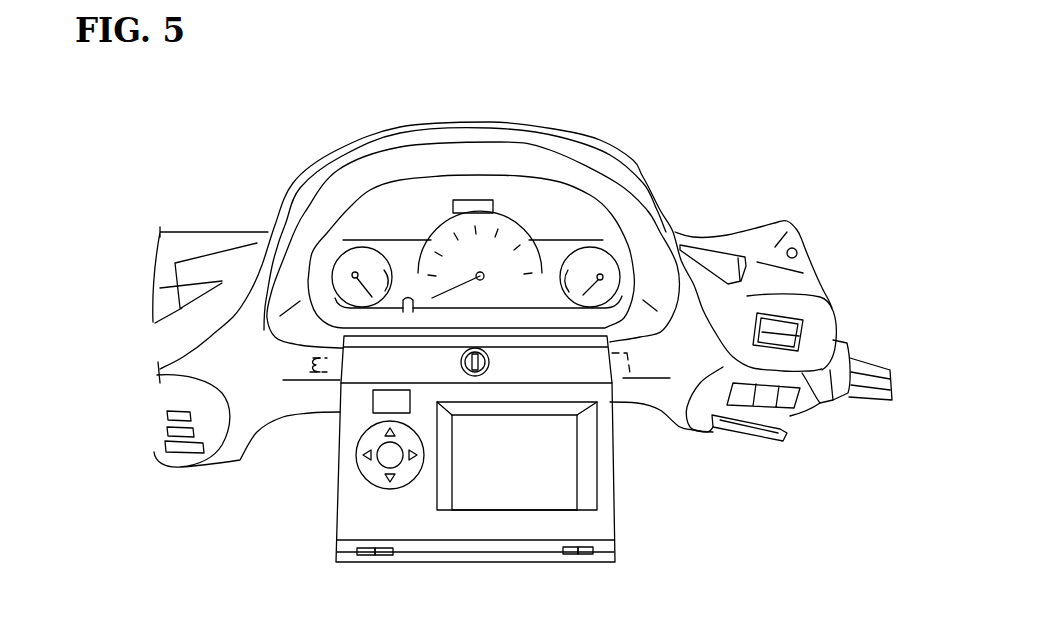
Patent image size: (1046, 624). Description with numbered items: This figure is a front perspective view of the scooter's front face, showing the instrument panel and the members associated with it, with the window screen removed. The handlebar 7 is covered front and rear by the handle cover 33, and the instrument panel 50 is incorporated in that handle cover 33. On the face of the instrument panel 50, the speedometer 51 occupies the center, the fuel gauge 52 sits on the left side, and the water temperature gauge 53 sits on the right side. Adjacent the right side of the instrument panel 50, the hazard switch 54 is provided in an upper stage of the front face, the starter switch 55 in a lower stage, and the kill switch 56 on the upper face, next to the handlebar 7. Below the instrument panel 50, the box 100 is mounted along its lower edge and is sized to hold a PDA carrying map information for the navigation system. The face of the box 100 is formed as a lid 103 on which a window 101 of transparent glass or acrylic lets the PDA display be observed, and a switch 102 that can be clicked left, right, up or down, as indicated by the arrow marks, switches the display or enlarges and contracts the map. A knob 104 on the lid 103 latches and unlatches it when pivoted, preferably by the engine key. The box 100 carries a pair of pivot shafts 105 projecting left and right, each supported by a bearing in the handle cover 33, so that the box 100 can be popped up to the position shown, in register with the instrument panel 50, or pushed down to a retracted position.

The handlebar 7 is at (868, 378).
The handle cover 33 is at (288, 182).
The instrument panel 50 is at (553, 175).
The speedometer 51 is at (473, 238).
The fuel gauge 52 is at (378, 267).
The water temperature gauge 53 is at (588, 257).
The hazard switch 54 is at (790, 401).
The starter switch 55 is at (760, 436).
The kill switch 56 is at (787, 320).
The box 100 is at (326, 511).
The window 101 is at (532, 477).
The switch 102 is at (404, 481).
The lid 103 is at (353, 527).
The knob 104 is at (461, 362).
The pivot shaft 105 is at (317, 364).